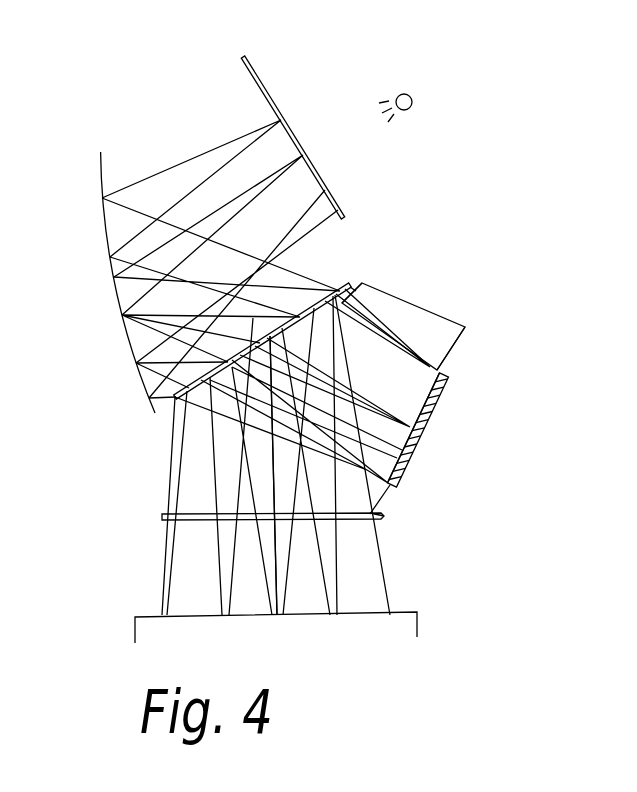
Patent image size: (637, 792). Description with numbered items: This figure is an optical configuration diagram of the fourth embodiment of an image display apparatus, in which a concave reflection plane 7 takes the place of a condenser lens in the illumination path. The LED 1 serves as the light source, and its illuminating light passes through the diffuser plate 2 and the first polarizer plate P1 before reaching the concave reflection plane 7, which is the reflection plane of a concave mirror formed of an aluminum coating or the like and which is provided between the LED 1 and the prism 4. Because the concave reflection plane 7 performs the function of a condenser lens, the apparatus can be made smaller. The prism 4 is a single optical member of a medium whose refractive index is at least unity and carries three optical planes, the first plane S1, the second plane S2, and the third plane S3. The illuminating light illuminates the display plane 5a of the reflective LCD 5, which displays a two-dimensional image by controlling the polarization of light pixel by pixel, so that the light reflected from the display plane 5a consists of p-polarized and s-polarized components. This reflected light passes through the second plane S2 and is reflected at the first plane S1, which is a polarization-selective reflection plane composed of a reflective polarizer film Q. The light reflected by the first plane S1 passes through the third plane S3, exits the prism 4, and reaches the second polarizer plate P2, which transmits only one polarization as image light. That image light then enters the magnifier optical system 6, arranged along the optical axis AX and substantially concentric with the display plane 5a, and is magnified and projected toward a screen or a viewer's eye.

The LED 1 is at (412, 104).
The diffuser plate 2 is at (262, 86).
The prism 4 is at (432, 312).
The reflective LCD 5 is at (427, 428).
The display plane 5a is at (425, 397).
The magnifier optical system 6 is at (417, 627).
The concave reflection plane 7 is at (100, 182).
The first polarizer plate P1 is at (344, 282).
The second polarizer plate P2 is at (378, 520).
The reflective polarizer film Q is at (358, 284).
The first plane S1 is at (368, 289).
The second plane S2 is at (463, 345).
The third plane S3 is at (190, 513).
The optical axis AX is at (275, 563).